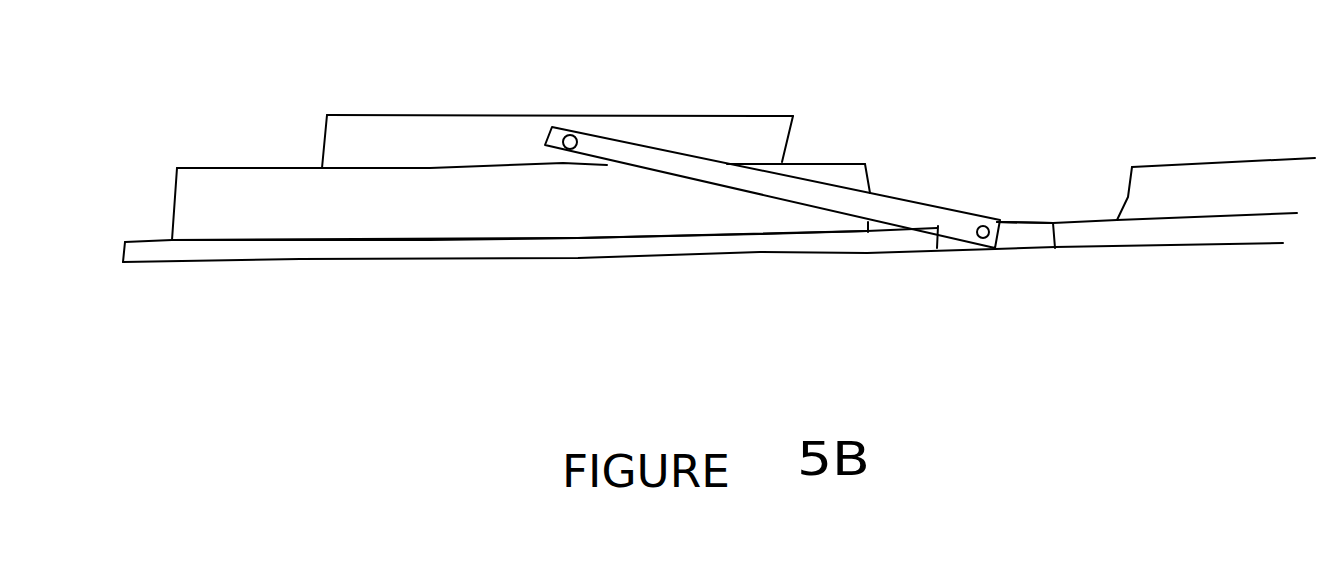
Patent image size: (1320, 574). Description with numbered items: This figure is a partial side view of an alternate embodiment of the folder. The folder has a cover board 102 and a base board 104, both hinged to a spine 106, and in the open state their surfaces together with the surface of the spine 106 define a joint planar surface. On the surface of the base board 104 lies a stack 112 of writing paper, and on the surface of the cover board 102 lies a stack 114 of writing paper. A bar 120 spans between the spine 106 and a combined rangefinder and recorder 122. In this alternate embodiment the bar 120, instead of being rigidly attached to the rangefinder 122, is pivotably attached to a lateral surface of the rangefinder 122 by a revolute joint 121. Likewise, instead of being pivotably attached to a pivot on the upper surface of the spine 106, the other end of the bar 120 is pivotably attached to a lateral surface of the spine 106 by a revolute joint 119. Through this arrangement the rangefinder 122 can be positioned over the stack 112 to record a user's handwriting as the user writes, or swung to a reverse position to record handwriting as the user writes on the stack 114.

The cover board 102 is at (1198, 235).
The base board 104 is at (578, 245).
The spine 106 is at (1020, 240).
The stack of writing paper 112 is at (430, 223).
The stack of writing paper 114 is at (1220, 207).
The revolute joint 119 is at (987, 224).
The bar 120 is at (830, 203).
The revolute joint 121 is at (571, 136).
The combined rangefinder and recorder 122 is at (410, 152).